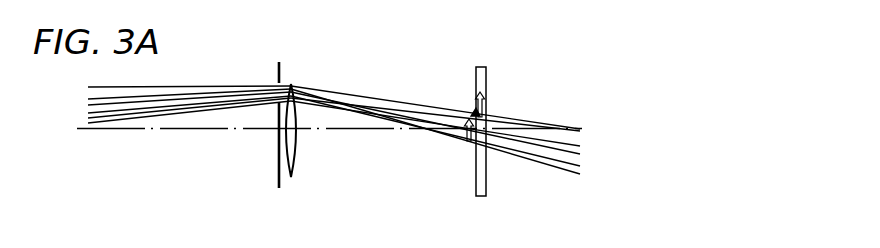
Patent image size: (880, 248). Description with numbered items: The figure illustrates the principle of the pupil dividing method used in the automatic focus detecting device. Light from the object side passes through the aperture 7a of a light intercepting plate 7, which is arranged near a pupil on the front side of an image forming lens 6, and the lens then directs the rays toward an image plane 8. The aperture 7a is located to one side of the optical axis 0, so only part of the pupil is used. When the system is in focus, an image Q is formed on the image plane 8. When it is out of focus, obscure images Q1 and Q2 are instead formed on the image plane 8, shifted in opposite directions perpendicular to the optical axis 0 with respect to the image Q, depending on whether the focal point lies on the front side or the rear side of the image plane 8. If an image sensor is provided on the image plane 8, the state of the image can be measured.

The optical axis 0 is at (175, 131).
The light intercepting plate 7 is at (278, 176).
The aperture 7a is at (280, 91).
The image forming lens 6 is at (292, 156).
The image plane 8 is at (481, 201).
The image Q is at (473, 110).
The obscure image Q1 is at (467, 135).
The obscure image Q2 is at (487, 98).